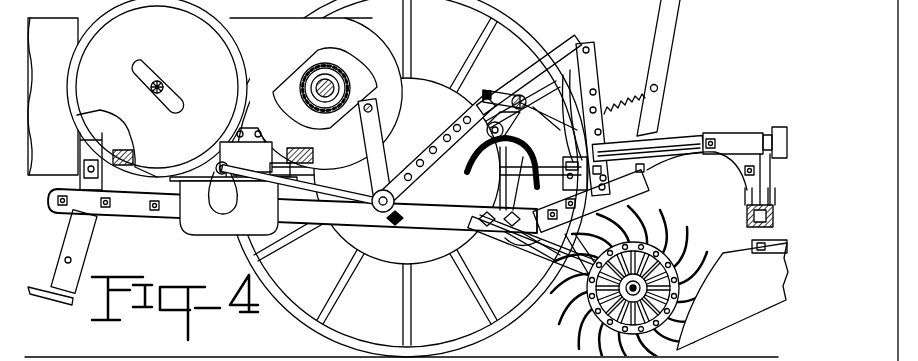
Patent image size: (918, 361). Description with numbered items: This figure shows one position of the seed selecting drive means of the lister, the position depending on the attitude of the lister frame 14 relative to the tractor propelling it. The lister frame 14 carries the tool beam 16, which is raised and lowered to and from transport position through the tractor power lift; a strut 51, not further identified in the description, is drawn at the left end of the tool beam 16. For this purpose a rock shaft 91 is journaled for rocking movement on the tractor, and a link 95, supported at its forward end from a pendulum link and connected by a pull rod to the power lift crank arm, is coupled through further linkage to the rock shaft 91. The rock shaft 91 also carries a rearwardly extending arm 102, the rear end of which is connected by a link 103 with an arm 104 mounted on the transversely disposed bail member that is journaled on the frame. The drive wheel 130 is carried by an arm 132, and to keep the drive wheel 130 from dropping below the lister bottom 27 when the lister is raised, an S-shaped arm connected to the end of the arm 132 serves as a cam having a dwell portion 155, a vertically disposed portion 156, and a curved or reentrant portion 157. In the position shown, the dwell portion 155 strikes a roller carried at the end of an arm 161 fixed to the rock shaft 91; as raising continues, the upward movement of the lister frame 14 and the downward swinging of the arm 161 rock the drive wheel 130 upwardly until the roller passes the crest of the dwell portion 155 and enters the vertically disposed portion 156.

The lister frame 14 is at (647, 190).
The tool beam 16 is at (341, 221).
The lister bottom 27 is at (750, 298).
The strut 51 is at (78, 237).
The rock shaft 91 is at (518, 94).
The link 95 is at (403, 178).
The rearwardly extending arm 102 is at (540, 70).
The link 103 is at (588, 66).
The arm 104 is at (606, 110).
The drive wheel 130 is at (584, 341).
The arm 132 is at (552, 258).
The dwell portion 155 is at (472, 172).
The vertically disposed portion 156 is at (563, 163).
The curved or reentrant portion 157 is at (518, 244).
The arm 161 is at (506, 127).